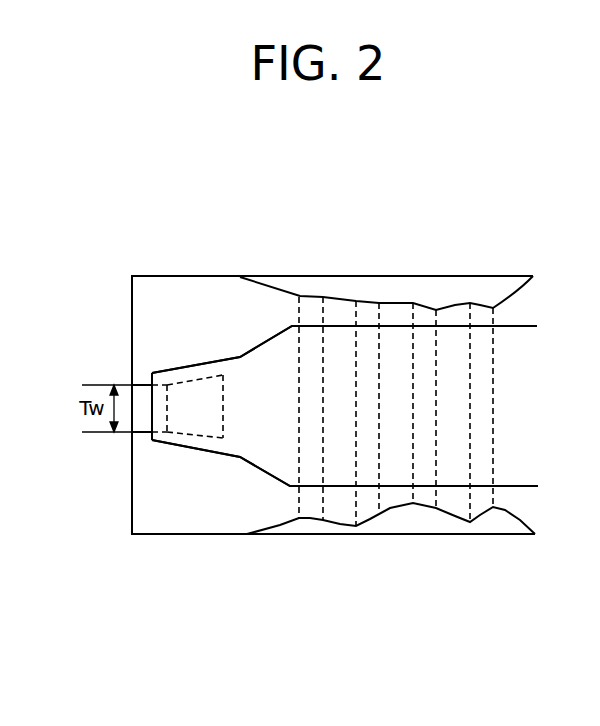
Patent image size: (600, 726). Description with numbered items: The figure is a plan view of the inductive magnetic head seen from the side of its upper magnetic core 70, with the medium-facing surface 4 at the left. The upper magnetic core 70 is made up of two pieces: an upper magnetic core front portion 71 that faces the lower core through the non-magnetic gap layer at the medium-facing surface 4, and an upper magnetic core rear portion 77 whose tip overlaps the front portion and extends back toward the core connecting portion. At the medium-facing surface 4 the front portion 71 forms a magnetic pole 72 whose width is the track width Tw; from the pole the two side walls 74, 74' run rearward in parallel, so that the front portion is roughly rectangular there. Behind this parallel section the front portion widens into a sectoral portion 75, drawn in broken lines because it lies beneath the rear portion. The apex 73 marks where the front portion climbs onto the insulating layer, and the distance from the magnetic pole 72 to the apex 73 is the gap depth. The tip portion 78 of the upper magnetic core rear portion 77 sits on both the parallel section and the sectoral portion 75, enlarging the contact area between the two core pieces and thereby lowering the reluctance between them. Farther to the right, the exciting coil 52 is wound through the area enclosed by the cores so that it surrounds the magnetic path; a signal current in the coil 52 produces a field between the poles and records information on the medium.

The medium-facing surface 4 is at (132, 293).
The upper magnetic core 70 is at (177, 190).
The upper magnetic core front portion 71 is at (142, 395).
The upper magnetic core rear portion 77 is at (263, 377).
The side wall 74 is at (107, 342).
The side wall 74' is at (108, 497).
The magnetic pole 72 is at (133, 420).
The apex 73 is at (165, 417).
The tip portion 78 is at (188, 440).
The sectoral portion 75 is at (210, 425).
The coil 52 is at (427, 460).